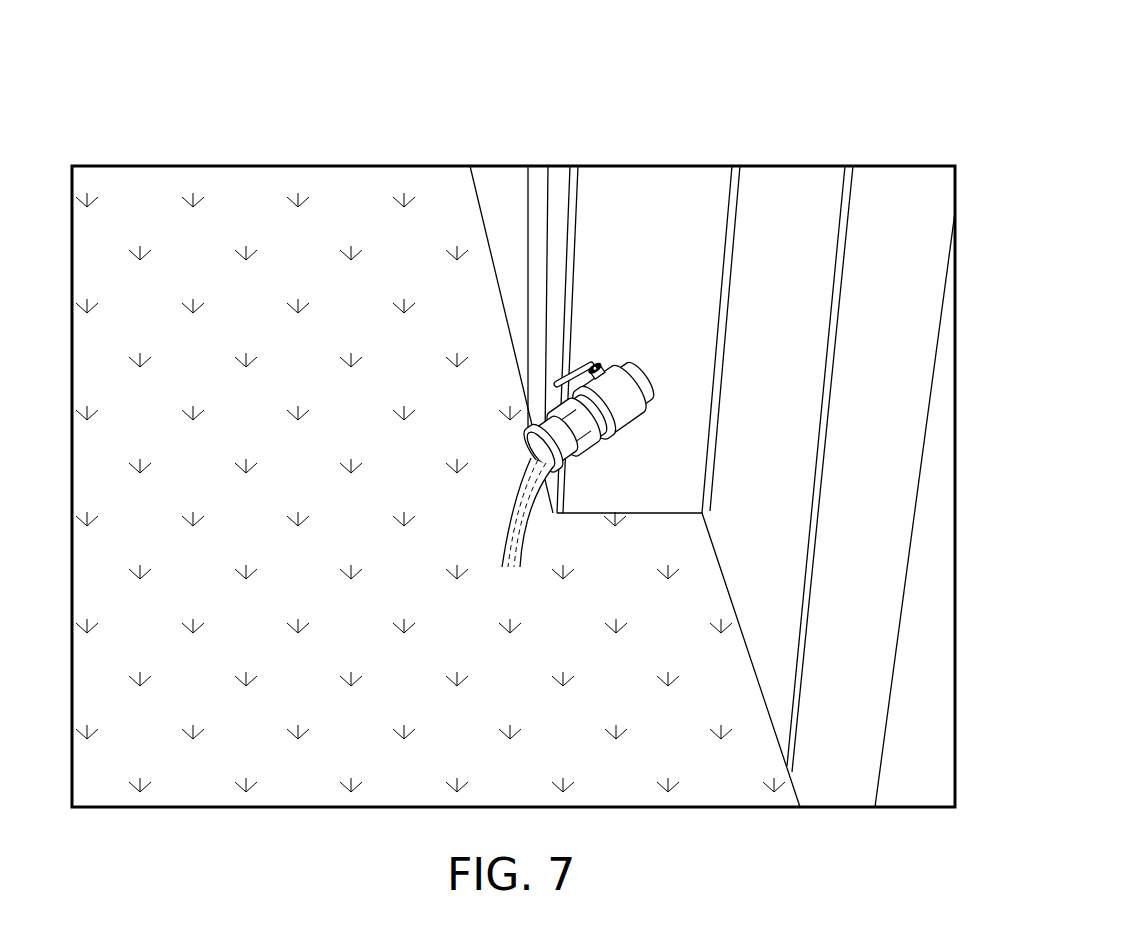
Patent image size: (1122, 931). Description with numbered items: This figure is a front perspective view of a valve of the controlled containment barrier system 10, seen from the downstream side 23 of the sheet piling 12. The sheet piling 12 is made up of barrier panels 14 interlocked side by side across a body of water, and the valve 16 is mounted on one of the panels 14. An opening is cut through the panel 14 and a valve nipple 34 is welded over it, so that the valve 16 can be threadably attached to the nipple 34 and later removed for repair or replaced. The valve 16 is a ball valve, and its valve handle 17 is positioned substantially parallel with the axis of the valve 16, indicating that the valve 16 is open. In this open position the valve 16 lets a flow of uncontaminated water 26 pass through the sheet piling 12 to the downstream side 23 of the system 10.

The controlled containment barrier system 10 is at (875, 132).
The sheet piling 12 is at (890, 296).
The barrier panel 14 is at (890, 296).
The valve 16 is at (612, 405).
The valve handle 17 is at (595, 361).
The downstream side 23 is at (265, 405).
The flow of uncontaminated water 26 is at (518, 517).
The valve nipple 34 is at (625, 362).